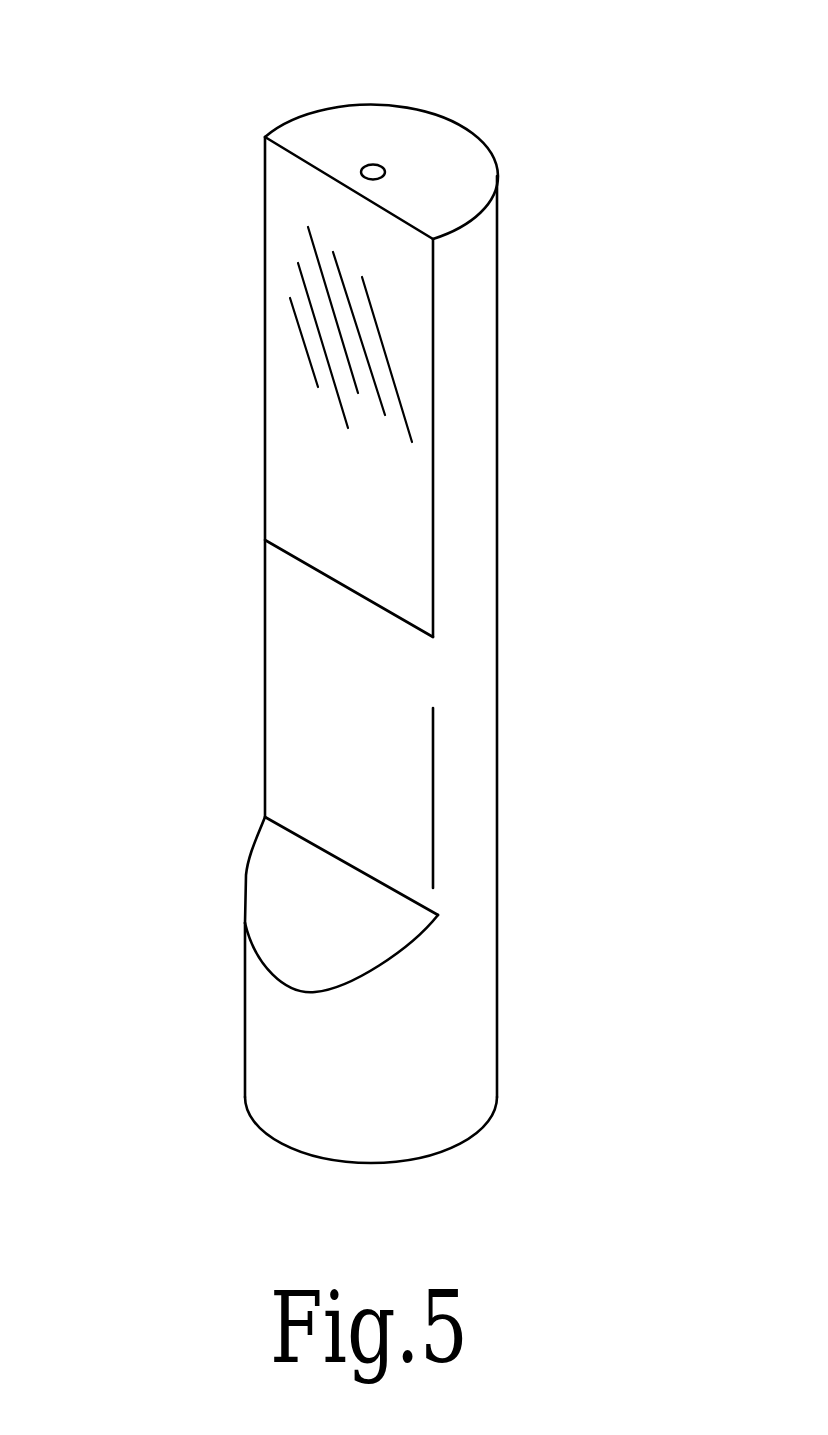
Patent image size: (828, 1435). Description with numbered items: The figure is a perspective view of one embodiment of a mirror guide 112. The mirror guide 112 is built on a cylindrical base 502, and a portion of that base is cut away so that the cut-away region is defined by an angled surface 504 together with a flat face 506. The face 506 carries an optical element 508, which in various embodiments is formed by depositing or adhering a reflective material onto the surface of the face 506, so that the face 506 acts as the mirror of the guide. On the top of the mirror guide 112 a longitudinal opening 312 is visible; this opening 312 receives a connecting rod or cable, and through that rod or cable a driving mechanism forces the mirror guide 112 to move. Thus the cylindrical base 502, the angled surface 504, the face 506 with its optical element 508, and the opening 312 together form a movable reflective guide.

The mirror guide 112 is at (498, 493).
The longitudinal opening 312 is at (365, 164).
The optical element 508 is at (265, 310).
The face 506 is at (265, 568).
The angled surface 504 is at (247, 868).
The cylindrical base 502 is at (245, 1018).